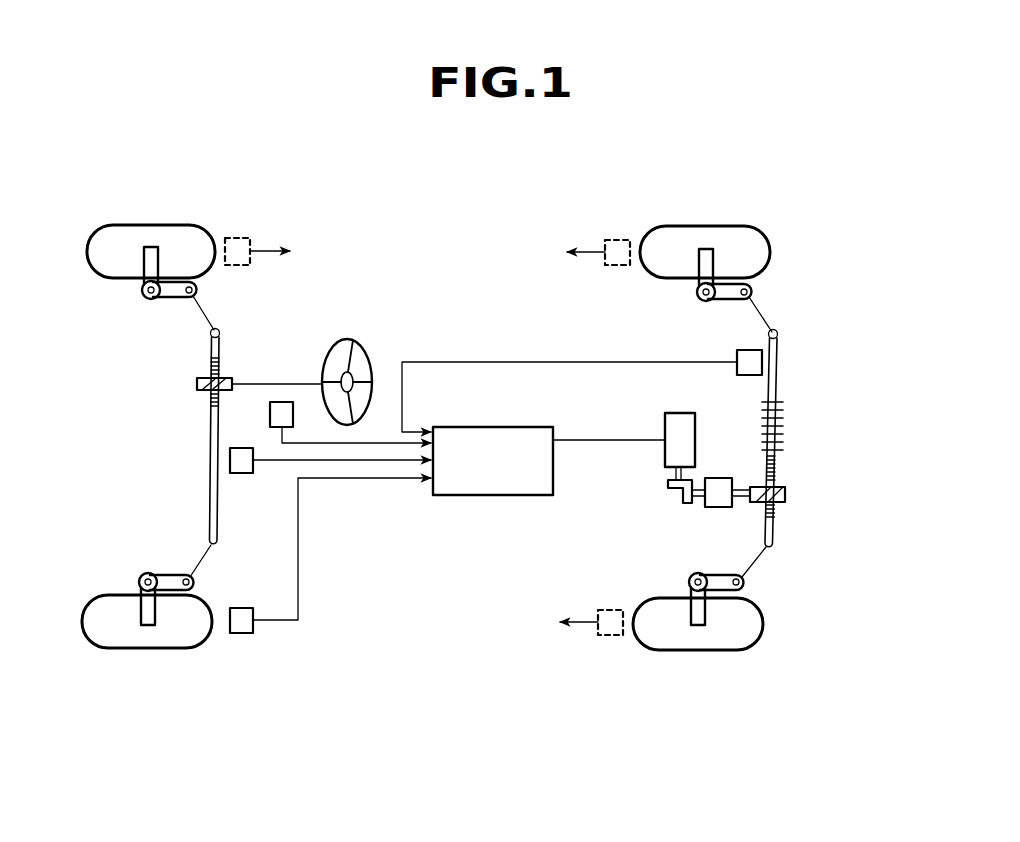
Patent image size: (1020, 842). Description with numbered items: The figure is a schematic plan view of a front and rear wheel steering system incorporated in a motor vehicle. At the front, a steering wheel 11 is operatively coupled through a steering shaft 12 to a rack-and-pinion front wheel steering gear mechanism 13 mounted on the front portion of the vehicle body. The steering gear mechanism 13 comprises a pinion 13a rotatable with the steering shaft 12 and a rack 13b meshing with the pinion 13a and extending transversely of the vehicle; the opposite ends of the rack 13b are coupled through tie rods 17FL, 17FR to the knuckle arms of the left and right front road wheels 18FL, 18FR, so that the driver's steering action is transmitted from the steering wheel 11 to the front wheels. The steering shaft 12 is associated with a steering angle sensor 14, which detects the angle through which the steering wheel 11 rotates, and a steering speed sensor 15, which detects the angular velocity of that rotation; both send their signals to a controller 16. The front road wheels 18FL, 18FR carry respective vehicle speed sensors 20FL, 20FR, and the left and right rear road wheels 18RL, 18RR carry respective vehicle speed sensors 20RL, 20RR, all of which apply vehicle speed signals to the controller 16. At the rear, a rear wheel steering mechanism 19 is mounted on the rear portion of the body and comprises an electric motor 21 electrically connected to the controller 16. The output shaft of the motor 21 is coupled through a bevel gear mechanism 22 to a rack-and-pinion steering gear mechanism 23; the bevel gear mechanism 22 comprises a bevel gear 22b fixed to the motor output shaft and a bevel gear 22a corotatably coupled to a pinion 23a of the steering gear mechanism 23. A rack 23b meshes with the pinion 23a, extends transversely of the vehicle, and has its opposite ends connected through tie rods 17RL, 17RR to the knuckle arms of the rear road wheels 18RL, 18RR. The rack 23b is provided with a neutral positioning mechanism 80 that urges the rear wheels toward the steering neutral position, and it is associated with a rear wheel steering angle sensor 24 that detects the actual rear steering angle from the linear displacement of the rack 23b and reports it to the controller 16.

The steering wheel 11 is at (367, 352).
The steering shaft 12 is at (292, 378).
The rack-and-pinion front wheel steering gear mechanism 13 is at (211, 436).
The pinion 13a is at (229, 378).
The rack 13b is at (209, 489).
The steering angle sensor 14 is at (270, 413).
The steering speed sensor 15 is at (239, 475).
The controller 16 is at (569, 428).
The tie rod 17FR is at (200, 306).
The tie rod 17FL is at (199, 564).
The tie rod 17RR is at (758, 312).
The tie rod 17RL is at (756, 566).
The right front road wheel 18FR is at (128, 230).
The left front road wheel 18FL is at (125, 649).
The right rear road wheel 18RR is at (740, 238).
The left rear road wheel 18RL is at (732, 651).
The rear wheel steering mechanism 19 is at (672, 457).
The vehicle speed sensor 20FR is at (243, 238).
The vehicle speed sensor 20FL is at (244, 634).
The vehicle speed sensor 20RR is at (613, 238).
The vehicle speed sensor 20RL is at (612, 637).
The electric motor 21 is at (680, 414).
The bevel gear mechanism 22 is at (671, 514).
The bevel gear 22a is at (661, 502).
The bevel gear 22b is at (667, 483).
The rack-and-pinion steering gear mechanism 23 is at (820, 438).
The pinion 23a is at (773, 486).
The rack 23b is at (777, 389).
The rear wheel steering angle sensor 24 is at (748, 377).
The neutral positioning mechanism 80 is at (796, 427).